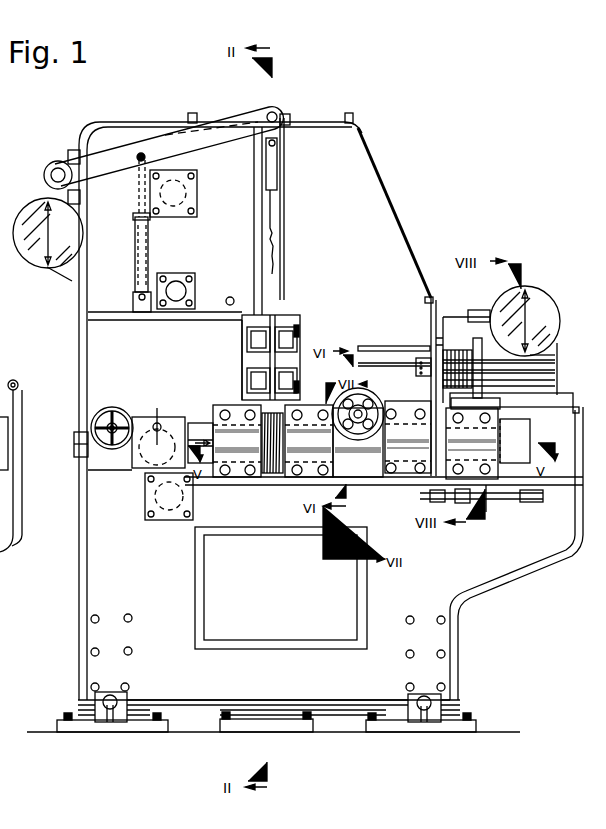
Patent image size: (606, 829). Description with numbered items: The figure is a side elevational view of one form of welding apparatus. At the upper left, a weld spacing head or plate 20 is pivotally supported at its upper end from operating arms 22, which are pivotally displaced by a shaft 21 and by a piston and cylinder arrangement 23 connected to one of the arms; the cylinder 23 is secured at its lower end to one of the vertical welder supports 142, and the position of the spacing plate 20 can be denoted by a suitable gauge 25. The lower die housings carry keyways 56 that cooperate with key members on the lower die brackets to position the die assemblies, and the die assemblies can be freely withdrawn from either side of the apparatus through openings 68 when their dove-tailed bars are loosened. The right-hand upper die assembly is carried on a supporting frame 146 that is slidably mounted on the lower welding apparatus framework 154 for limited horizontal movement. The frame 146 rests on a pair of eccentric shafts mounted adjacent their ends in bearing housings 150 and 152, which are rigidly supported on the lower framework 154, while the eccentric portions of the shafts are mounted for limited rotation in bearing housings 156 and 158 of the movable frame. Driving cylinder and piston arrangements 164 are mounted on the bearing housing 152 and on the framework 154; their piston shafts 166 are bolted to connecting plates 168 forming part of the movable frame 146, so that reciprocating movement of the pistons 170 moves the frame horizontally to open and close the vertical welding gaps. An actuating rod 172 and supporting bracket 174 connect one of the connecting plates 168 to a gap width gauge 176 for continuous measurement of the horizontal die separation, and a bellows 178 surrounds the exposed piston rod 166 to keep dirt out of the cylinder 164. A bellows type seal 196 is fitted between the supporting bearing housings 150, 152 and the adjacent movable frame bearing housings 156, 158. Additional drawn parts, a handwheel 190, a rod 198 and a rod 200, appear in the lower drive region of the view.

The weld spacing head 20 is at (278, 212).
The shaft 21 is at (58, 168).
The operating arms 22 is at (205, 126).
The piston and cylinder arrangement 23 is at (150, 248).
The gauge 25 is at (26, 212).
The keyways 56 is at (295, 325).
The openings 68 is at (300, 330).
The vertical welder supports 142 is at (100, 334).
The supporting frame 146 is at (403, 209).
The bearing housing 150 is at (236, 474).
The bearing housing 152 is at (497, 463).
The lower welding apparatus framework 154 is at (512, 585).
The bearing housing 156 is at (305, 487).
The bearing housing 158 is at (370, 478).
The driving cylinder and piston arrangement 164 is at (538, 381).
The piston shaft 166 is at (463, 352).
The connecting plates 168 is at (432, 345).
The pistons 170 is at (552, 352).
The actuating rod 172 is at (480, 310).
The supporting bracket 174 is at (433, 300).
The gap width gauge 176 is at (533, 294).
The bellows 178 is at (489, 390).
The handwheel 190 is at (354, 390).
The bellows type seal 196 is at (268, 478).
The rod 198 is at (503, 503).
The rod 200 is at (418, 497).